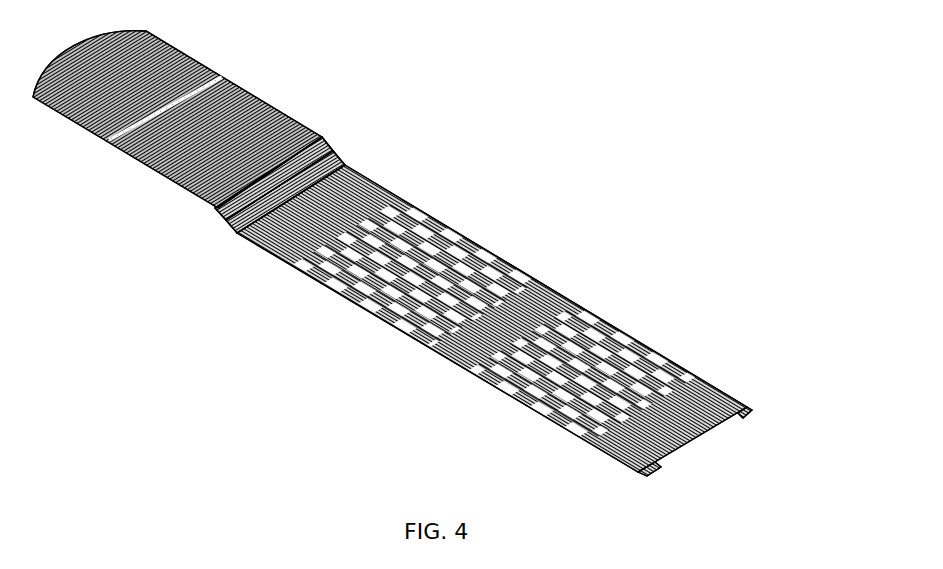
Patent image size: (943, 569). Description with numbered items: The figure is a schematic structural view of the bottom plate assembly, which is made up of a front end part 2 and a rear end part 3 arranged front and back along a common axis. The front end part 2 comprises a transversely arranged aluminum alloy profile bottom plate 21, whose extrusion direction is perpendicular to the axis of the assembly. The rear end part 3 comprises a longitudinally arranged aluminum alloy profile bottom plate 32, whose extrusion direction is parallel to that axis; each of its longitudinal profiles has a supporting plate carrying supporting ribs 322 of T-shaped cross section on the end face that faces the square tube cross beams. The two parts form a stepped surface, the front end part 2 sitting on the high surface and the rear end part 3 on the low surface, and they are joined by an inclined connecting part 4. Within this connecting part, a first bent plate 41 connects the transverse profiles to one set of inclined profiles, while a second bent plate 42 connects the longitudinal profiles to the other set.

The front end part 2 is at (242, 79).
The transversely arranged aluminum alloy profile bottom plate 21 is at (118, 160).
The inclined connecting part 4 is at (266, 190).
The first bent plate 41 is at (212, 212).
The second bent plate 42 is at (231, 240).
The rear end part 3 is at (553, 320).
The longitudinally arranged aluminum alloy profile bottom plate 32 is at (612, 339).
The supporting ribs 322 is at (753, 403).